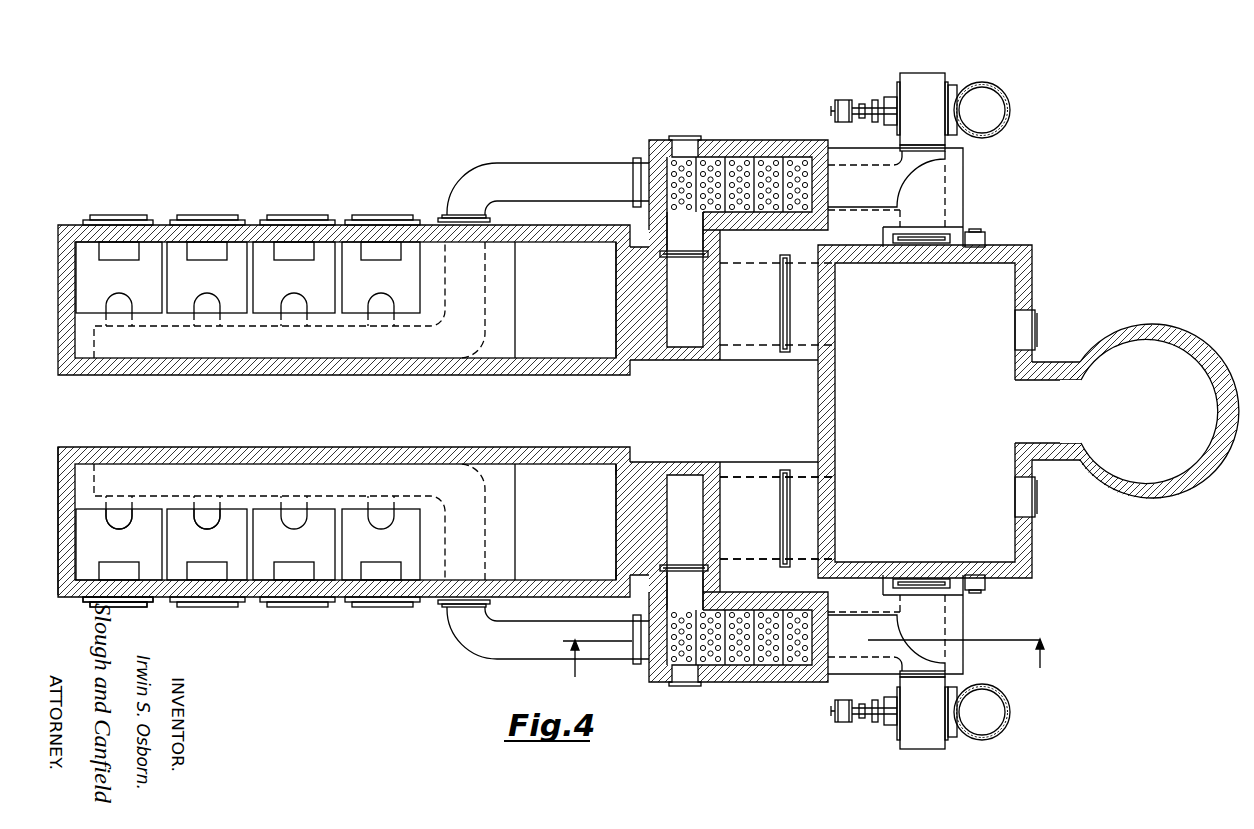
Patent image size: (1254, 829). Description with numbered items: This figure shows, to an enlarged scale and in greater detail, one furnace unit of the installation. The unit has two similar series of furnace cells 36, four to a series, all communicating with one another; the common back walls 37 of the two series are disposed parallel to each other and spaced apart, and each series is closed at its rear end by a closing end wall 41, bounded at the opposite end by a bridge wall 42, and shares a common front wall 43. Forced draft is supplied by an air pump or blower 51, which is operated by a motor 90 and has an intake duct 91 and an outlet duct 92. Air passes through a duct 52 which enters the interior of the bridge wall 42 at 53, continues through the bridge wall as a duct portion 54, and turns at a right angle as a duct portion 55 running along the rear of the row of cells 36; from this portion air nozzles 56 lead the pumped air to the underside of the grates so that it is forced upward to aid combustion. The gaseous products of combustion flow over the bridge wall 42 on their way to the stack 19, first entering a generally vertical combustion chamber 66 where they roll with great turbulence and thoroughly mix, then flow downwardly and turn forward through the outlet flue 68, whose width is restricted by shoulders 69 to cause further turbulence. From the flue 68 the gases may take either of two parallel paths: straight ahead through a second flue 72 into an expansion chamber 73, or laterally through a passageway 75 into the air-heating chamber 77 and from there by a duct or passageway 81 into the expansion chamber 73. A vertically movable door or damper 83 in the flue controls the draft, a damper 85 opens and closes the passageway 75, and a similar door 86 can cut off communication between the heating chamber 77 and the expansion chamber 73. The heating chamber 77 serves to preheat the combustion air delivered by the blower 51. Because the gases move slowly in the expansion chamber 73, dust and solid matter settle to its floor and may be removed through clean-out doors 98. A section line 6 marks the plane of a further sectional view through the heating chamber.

The section line 6- 6 is at (800, 655).
The stack 19 is at (1223, 432).
The furnace cell 36 is at (248, 411).
The back wall 37 is at (192, 376).
The closing end wall 41 is at (68, 566).
The bridge wall 42 is at (515, 300).
The common front wall 43 is at (135, 597).
The air pump 51 is at (912, 752).
The duct 52 is at (484, 648).
The duct entrance 53 is at (492, 601).
The duct portion 54 is at (488, 541).
The duct portion 55 is at (431, 463).
The air nozzles 56 is at (115, 524).
The combustion chamber 66 is at (578, 411).
The outlet flue 68 is at (675, 411).
The shoulders 69 is at (613, 472).
The second flue 72 is at (777, 518).
The expansion chamber 73 is at (949, 411).
The passageway 75 is at (685, 411).
The air-heating chamber 77 is at (744, 157).
The duct or passageway 81 is at (950, 632).
The door or damper 83 is at (780, 331).
The door or damper 85 is at (692, 258).
The door 86 is at (935, 244).
The motor 90 is at (851, 724).
The intake duct 91 is at (986, 707).
The outlet duct 92 is at (919, 636).
The clean-out doors 98 is at (1035, 330).